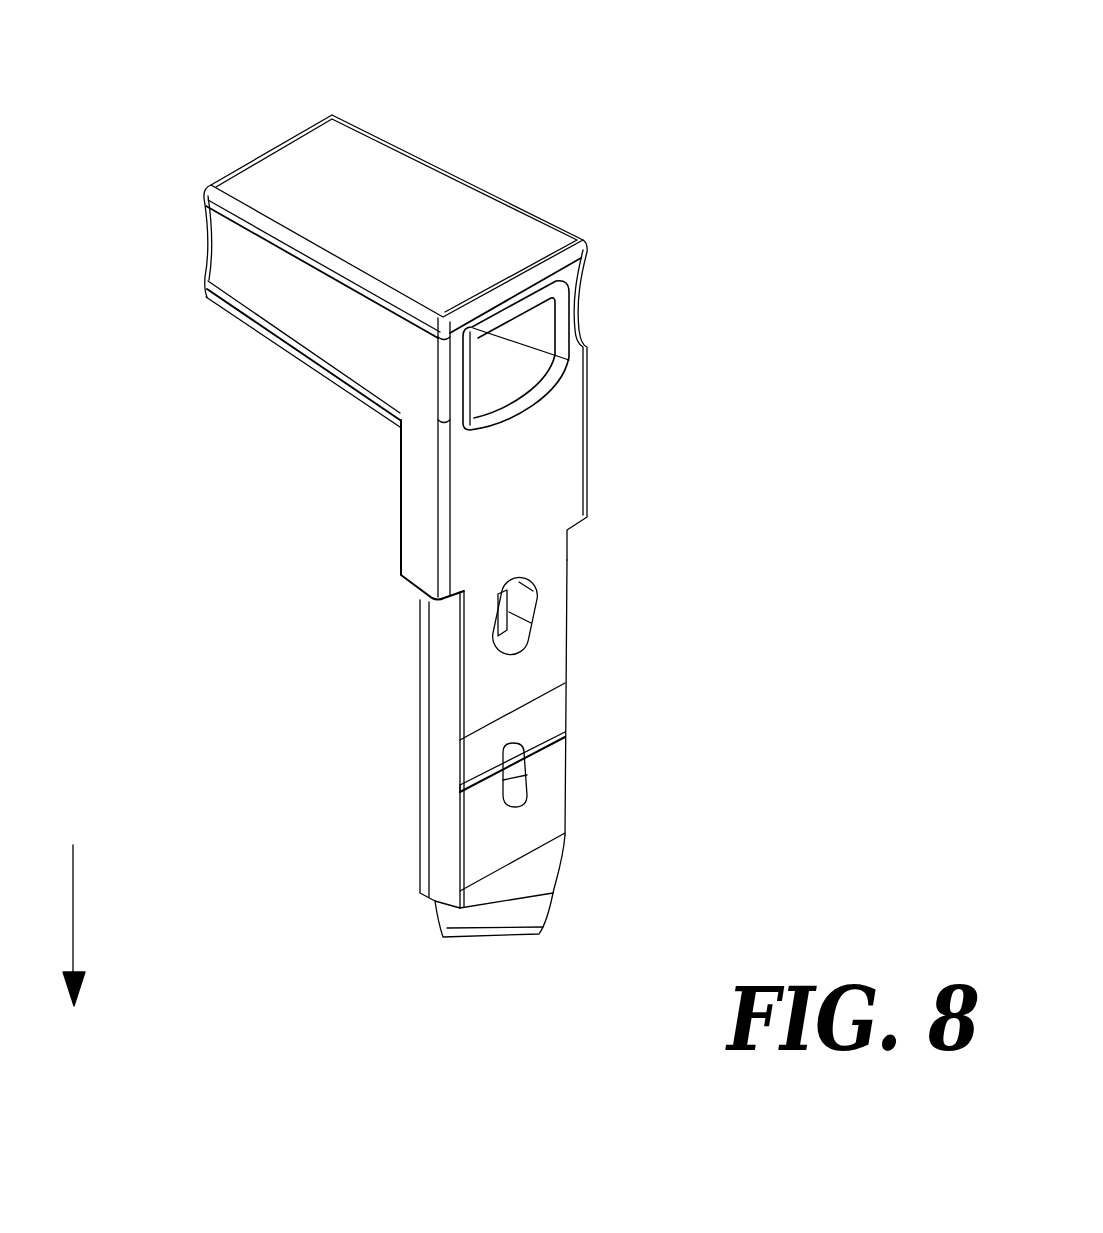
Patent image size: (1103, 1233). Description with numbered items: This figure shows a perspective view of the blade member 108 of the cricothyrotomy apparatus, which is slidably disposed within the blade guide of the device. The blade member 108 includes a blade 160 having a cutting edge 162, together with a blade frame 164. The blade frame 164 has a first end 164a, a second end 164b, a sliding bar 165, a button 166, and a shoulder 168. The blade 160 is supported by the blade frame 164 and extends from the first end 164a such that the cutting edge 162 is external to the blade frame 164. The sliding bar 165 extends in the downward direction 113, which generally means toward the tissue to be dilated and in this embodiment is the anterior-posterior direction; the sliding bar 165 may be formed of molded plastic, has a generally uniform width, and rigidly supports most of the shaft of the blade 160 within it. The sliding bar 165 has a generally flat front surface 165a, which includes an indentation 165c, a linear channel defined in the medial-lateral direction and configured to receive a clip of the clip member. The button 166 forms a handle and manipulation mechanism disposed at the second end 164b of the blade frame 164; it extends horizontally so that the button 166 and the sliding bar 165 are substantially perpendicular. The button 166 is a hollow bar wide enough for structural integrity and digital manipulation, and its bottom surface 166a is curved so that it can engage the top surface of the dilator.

The blade member 108 is at (750, 244).
The downward direction 113 is at (80, 922).
The blade 160 is at (553, 908).
The cutting edge 162 is at (483, 937).
The blade frame 164 is at (615, 449).
The first end 164a is at (362, 985).
The second end 164b is at (570, 140).
The sliding bar 165 is at (440, 722).
The front surface 165a is at (540, 633).
The indentation 165c is at (540, 713).
The button 166 is at (422, 200).
The bottom surface 166a is at (341, 383).
The shoulder 168 is at (409, 585).